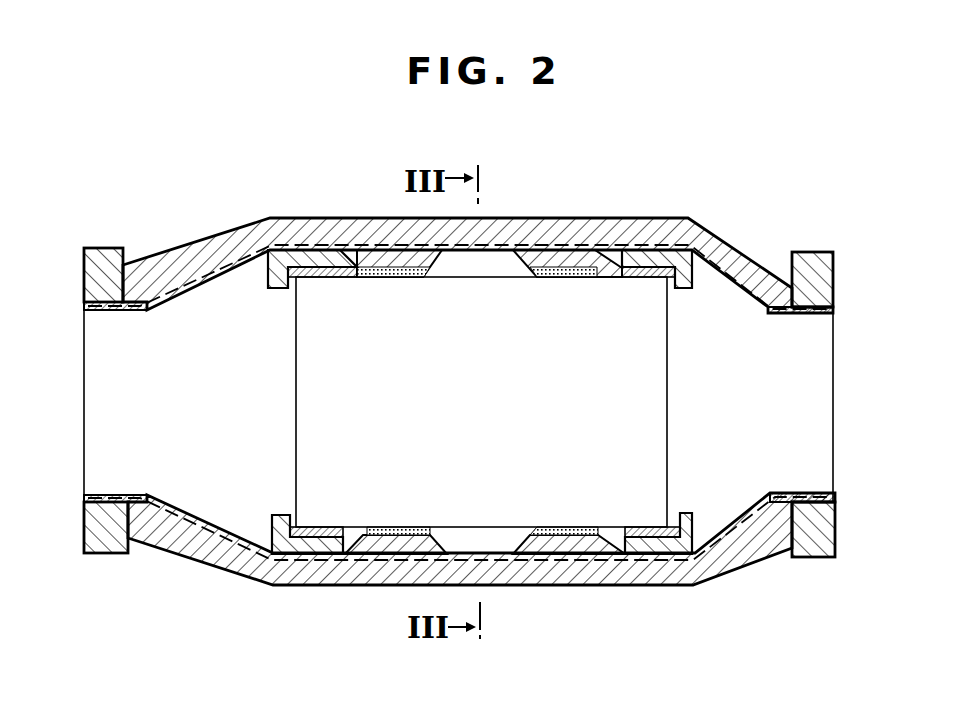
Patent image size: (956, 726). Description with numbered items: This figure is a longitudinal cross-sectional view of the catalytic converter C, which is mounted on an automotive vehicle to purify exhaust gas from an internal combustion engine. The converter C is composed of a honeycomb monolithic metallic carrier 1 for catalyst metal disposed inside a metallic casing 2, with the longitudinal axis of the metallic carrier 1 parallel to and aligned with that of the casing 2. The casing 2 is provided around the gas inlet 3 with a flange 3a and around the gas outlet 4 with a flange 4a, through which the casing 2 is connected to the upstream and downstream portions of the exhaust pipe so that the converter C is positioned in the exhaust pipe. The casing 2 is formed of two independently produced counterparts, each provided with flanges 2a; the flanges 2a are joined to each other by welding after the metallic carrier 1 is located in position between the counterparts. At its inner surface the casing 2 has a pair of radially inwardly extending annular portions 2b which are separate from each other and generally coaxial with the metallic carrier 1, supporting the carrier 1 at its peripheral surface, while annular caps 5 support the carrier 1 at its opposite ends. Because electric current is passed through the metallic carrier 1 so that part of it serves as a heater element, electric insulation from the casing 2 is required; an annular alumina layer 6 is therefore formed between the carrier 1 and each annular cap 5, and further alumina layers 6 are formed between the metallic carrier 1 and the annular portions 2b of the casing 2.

The honeycomb monolithic metallic carrier 1 is at (507, 485).
The metallic casing 2 is at (178, 538).
The flanges of casing counterparts 2a is at (577, 233).
The radially inwardly extending annular portions 2b is at (388, 253).
The gas inlet 3 is at (100, 345).
The flange at gas inlet 3a is at (113, 550).
The gas outlet 4 is at (812, 343).
The flange at gas outlet 4a is at (812, 537).
The annular cap 5 is at (330, 543).
The annular alumina layer 6 is at (317, 263).
The catalytic converter C is at (692, 199).